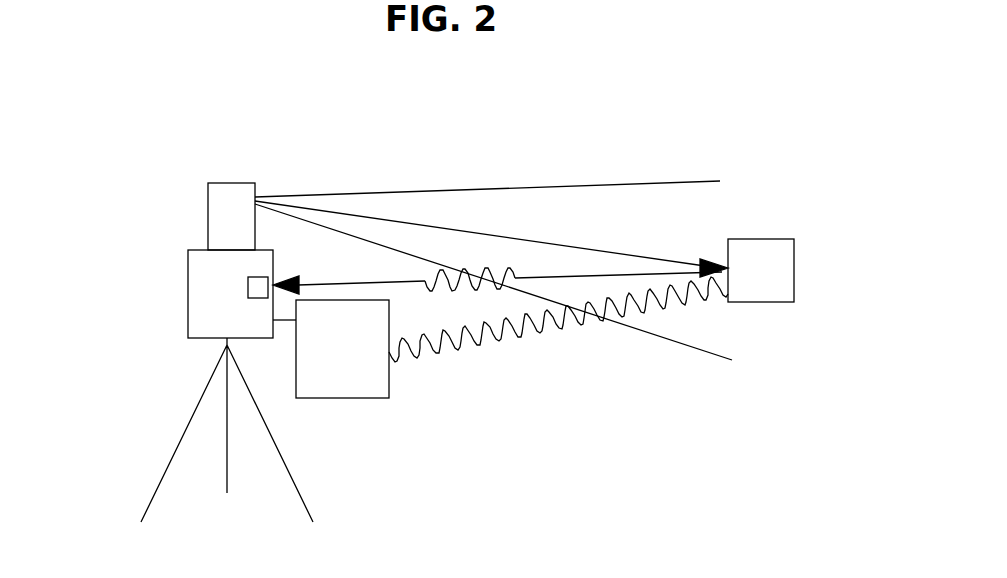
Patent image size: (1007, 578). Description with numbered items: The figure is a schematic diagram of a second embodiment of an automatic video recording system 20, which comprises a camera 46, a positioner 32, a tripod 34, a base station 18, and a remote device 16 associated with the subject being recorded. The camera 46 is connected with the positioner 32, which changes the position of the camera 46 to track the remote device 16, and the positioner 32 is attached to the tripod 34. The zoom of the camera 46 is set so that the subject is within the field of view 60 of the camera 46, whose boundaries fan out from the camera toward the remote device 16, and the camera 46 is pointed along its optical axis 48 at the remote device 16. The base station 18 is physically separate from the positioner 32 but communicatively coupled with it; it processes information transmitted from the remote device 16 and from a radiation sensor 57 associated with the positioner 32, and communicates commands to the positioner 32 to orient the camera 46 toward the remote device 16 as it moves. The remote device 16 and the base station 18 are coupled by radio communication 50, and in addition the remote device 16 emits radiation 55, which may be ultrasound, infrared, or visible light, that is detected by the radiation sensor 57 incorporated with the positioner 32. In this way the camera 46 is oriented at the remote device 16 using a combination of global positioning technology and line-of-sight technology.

The remote device 16 is at (771, 253).
The base station 18 is at (362, 385).
The automatic video recording system 20 is at (548, 508).
The positioner 32 is at (223, 297).
The tripod 34 is at (180, 440).
The camera 46 is at (223, 219).
The optical axis 48 is at (570, 247).
The radio communication 50 is at (490, 327).
The radiation 55 is at (378, 282).
The radiation sensor 57 is at (258, 277).
The field of view 60 is at (525, 185).